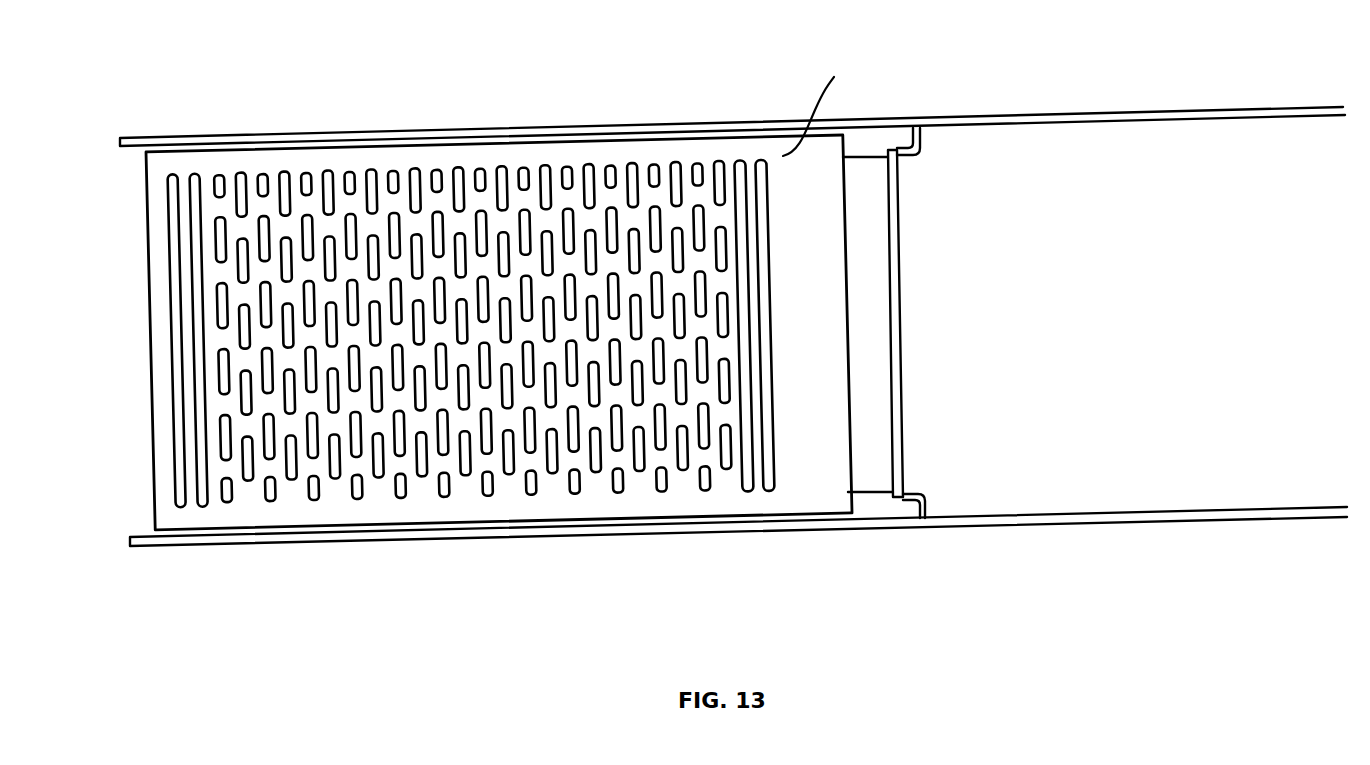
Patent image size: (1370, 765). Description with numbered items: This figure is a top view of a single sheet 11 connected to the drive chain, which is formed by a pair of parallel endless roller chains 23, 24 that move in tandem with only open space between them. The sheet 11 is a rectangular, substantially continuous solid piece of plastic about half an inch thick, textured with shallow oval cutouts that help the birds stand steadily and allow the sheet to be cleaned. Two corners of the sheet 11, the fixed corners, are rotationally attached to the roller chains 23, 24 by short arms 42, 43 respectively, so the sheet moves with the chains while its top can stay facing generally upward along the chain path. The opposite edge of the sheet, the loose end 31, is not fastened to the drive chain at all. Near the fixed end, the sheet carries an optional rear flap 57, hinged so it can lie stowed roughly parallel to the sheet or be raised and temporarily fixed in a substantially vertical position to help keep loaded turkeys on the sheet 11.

The sheet 11 is at (833, 104).
The endless roller chain 23 is at (1005, 115).
The endless roller chain 24 is at (1102, 522).
The loose end 31 is at (148, 408).
The short arm 42 is at (922, 140).
The short arm 43 is at (933, 497).
The rear flap 57 is at (868, 475).